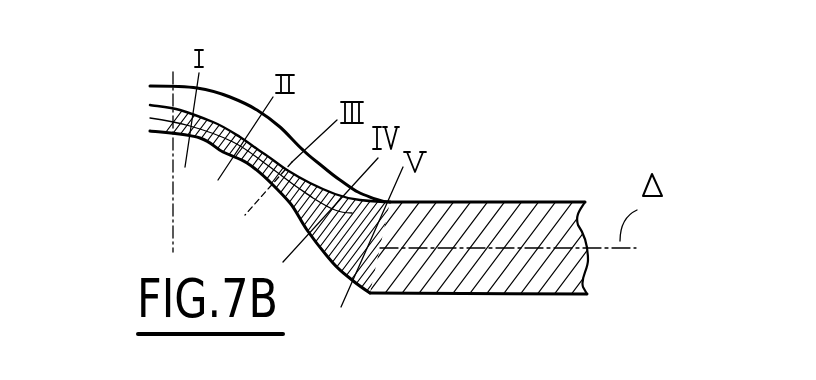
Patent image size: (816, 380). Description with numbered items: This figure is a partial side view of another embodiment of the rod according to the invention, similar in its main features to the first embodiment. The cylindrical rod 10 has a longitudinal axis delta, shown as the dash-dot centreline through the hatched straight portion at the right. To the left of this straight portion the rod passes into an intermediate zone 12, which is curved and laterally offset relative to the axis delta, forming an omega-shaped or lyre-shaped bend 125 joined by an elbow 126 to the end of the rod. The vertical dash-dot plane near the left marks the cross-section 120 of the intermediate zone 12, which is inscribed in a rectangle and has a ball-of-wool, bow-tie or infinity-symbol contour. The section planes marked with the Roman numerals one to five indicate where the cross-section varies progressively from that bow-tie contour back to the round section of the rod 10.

The intermediate zone 12 is at (248, 63).
The cylindrical rod 10 is at (512, 196).
The bend 125 is at (160, 130).
The elbow 126 is at (363, 209).
The cross-section 120 is at (172, 201).